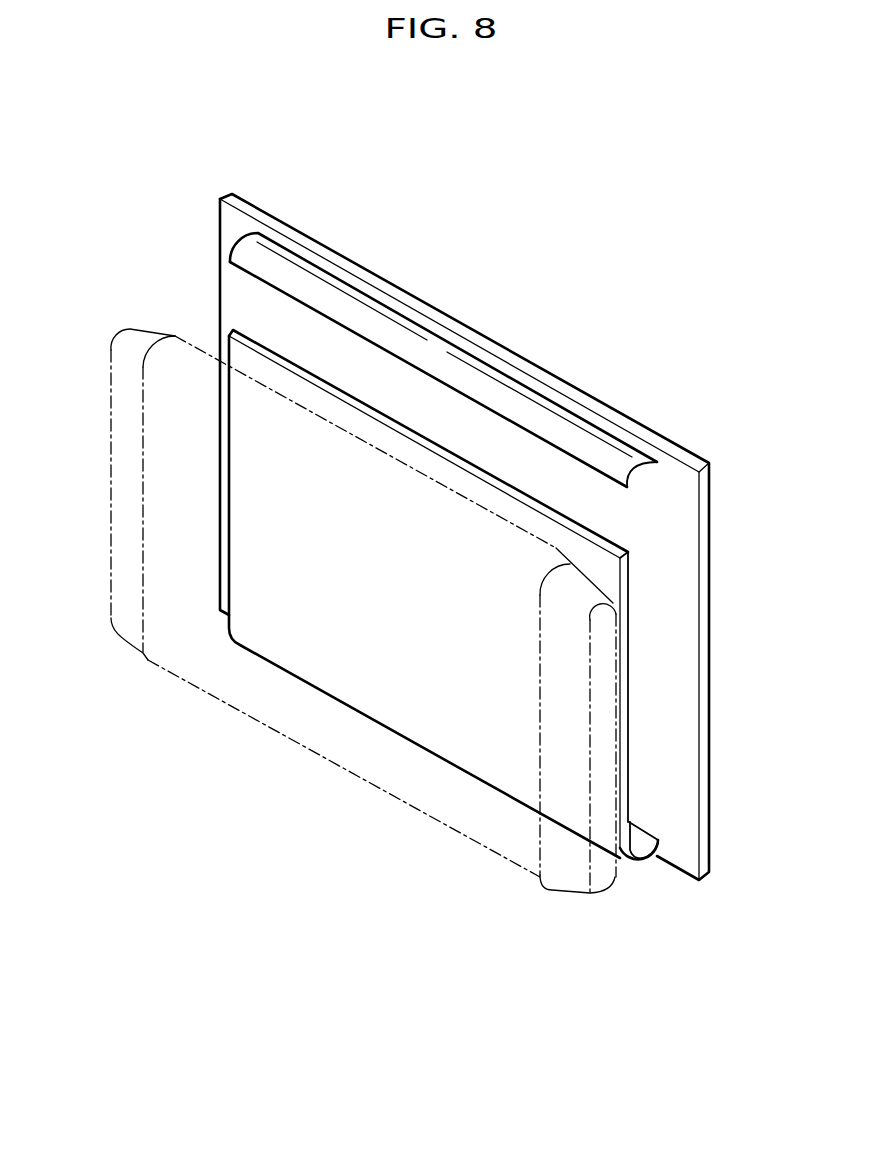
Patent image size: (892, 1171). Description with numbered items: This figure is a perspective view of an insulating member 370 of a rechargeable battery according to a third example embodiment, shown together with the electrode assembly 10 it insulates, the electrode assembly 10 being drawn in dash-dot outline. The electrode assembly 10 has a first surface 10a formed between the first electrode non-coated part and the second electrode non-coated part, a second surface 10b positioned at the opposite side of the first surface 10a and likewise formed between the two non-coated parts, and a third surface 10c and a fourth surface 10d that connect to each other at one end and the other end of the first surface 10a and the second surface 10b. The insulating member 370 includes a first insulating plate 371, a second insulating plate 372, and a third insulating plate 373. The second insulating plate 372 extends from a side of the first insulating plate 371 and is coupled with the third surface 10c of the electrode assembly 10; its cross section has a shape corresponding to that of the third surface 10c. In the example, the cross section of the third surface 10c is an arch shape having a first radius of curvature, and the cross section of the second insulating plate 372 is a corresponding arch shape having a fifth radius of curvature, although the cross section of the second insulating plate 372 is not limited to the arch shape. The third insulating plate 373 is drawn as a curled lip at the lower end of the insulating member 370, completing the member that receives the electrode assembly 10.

The electrode assembly 10 is at (338, 618).
The first surface 10a is at (198, 628).
The second surface 10b is at (397, 763).
The third surface 10c is at (193, 363).
The fourth surface 10d is at (552, 890).
The insulating member 370 is at (469, 569).
The first insulating plate 371 is at (657, 545).
The second insulating plate 372 is at (246, 250).
The third insulating plate 373 is at (640, 848).